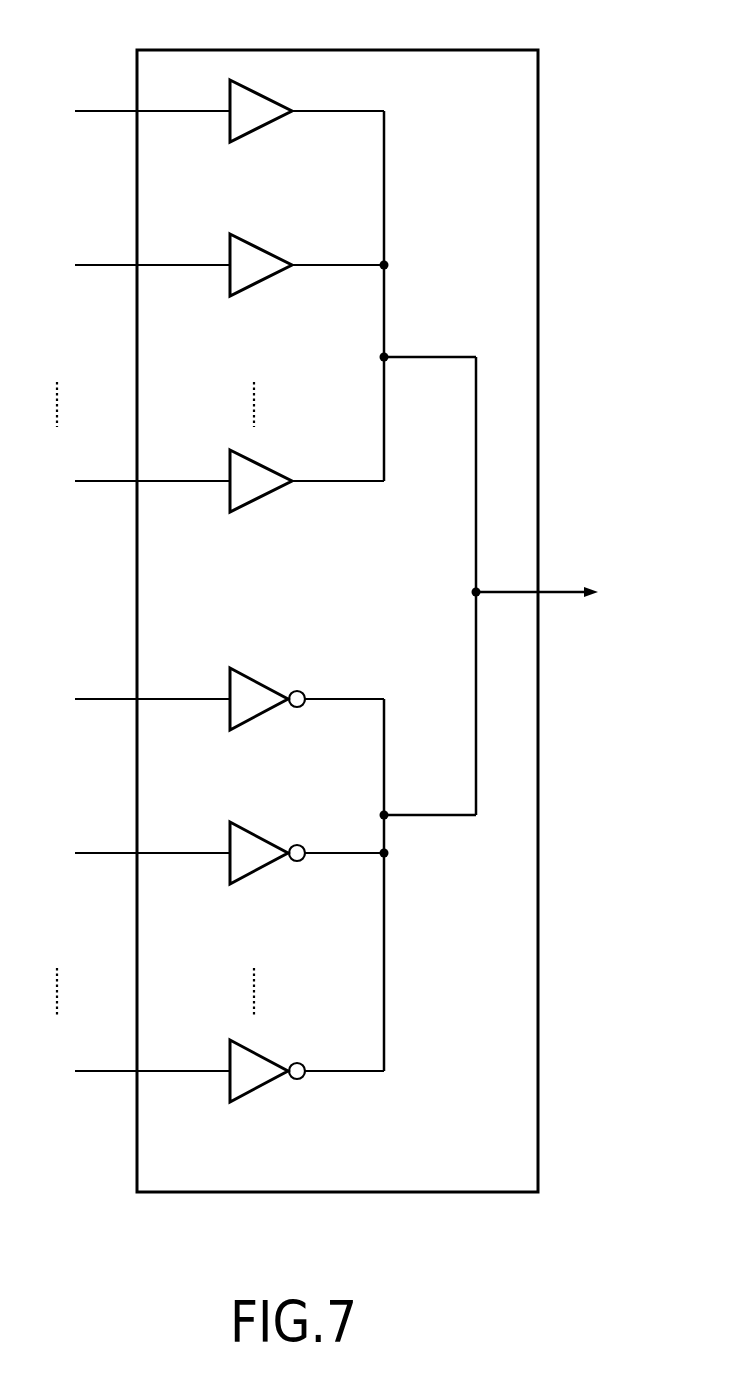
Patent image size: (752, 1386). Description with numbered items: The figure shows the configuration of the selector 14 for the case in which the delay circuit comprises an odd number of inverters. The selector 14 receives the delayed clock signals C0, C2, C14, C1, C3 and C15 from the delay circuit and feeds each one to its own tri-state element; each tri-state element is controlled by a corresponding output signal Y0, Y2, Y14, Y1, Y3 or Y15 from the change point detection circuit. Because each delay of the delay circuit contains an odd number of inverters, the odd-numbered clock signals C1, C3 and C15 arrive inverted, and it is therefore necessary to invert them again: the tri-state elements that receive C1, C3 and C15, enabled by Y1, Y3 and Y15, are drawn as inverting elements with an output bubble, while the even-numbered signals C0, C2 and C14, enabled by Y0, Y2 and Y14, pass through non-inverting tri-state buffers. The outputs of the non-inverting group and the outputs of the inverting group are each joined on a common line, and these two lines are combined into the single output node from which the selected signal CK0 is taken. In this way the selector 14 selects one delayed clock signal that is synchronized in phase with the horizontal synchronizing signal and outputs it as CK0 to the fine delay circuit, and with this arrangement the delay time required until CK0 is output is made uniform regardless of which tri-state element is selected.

The selector 14 is at (488, 50).
The delayed clock signal C0 is at (138, 112).
The delayed clock signal C2 is at (138, 266).
The delayed clock signal C14 is at (131, 482).
The delayed clock signal C1 is at (138, 700).
The delayed clock signal C3 is at (138, 854).
The delayed clock signal C15 is at (131, 1072).
The output signal Y0 is at (254, 142).
The output signal Y2 is at (254, 296).
The output signal Y14 is at (254, 512).
The output signal Y1 is at (254, 730).
The output signal Y3 is at (254, 884).
The output signal Y15 is at (254, 1102).
The selected signal CK0 is at (571, 593).